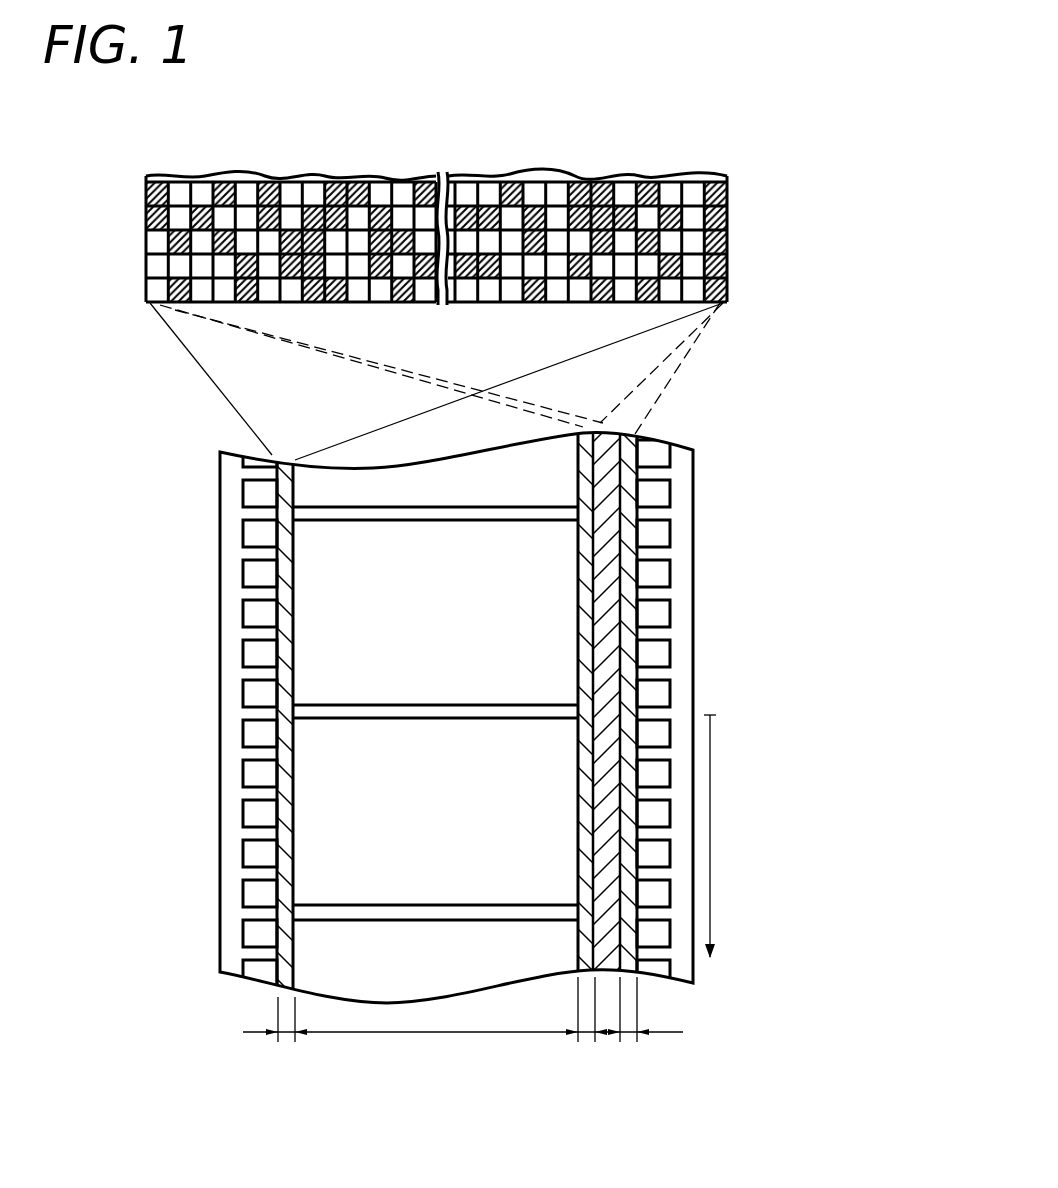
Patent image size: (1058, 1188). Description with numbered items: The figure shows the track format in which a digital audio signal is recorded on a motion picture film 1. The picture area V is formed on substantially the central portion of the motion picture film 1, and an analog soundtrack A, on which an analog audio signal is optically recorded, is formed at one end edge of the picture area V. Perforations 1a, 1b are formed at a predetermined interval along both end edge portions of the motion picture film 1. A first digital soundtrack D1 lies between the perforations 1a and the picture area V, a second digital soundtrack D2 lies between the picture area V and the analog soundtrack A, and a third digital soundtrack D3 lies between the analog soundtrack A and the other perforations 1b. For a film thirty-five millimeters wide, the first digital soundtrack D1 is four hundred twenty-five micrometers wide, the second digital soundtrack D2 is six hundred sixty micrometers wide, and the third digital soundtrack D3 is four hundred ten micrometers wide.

The motion picture film 1 is at (693, 635).
The perforations 1a is at (245, 620).
The perforations 1b is at (663, 533).
The first digital soundtrack D1 is at (727, 214).
The second digital soundtrack D2 is at (587, 1035).
The third digital soundtrack D3 is at (628, 1035).
The analog soundtrack A is at (607, 1035).
The picture area V is at (436, 1035).